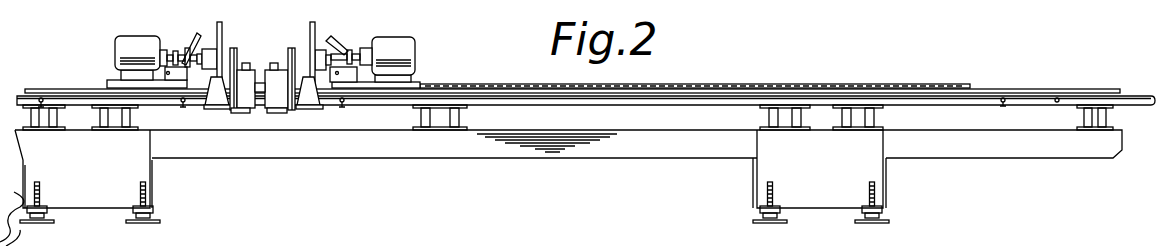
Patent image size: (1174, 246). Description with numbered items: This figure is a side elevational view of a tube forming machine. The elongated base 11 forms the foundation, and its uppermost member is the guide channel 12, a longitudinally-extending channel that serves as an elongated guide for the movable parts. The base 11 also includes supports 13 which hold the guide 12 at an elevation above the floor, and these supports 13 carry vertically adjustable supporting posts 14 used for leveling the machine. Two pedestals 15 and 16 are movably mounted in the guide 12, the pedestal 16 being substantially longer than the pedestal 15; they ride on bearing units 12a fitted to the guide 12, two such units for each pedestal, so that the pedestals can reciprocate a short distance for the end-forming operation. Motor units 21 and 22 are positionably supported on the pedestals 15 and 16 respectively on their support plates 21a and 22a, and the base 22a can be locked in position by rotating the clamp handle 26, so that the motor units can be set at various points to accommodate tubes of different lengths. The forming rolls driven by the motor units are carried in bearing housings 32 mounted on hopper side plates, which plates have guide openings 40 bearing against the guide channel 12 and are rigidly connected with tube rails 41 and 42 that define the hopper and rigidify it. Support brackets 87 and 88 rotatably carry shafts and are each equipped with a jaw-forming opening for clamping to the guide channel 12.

The elongated base 11 is at (562, 158).
The guide channel 12 is at (935, 102).
The bearing unit 12a is at (42, 107).
The supports 13 is at (154, 221).
The vertically adjustable supporting posts 14 is at (39, 192).
The pedestal 15 is at (50, 88).
The pedestal 16 is at (890, 85).
The motor unit 21 is at (135, 44).
The motor unit support plate 21a is at (110, 81).
The motor unit 22 is at (392, 45).
The motor unit support plate 22a is at (420, 82).
The clamp handle 26 is at (337, 40).
The bearing housing 32 is at (212, 49).
The guide opening 40 is at (222, 105).
The tube rail 41 is at (232, 48).
The tube rail 42 is at (293, 48).
The support bracket 87 is at (246, 100).
The support bracket 88 is at (282, 113).